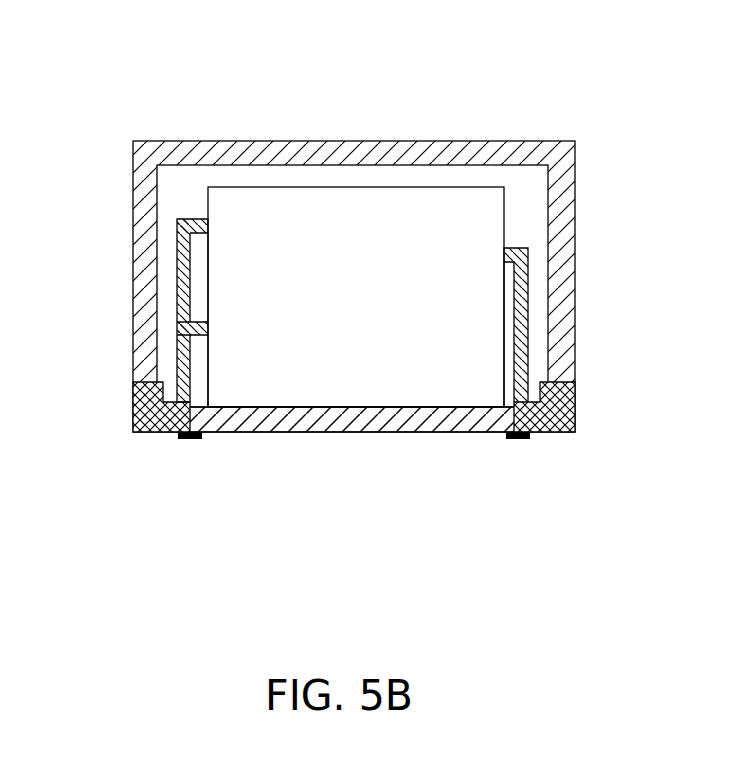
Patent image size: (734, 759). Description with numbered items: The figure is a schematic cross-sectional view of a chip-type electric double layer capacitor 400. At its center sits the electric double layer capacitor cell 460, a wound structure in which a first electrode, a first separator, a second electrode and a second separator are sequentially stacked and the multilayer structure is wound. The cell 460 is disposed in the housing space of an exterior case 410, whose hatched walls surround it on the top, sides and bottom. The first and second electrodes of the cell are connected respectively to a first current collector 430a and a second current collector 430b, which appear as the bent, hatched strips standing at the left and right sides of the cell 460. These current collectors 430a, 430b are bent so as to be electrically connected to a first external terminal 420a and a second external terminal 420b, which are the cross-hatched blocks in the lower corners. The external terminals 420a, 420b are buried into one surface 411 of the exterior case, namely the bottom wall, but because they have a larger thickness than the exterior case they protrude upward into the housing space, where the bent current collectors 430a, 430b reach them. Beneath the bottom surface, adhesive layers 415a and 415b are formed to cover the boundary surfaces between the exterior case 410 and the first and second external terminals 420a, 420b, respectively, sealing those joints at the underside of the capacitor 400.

The chip-type electric double layer capacitor 400 is at (363, 27).
The exterior case 410 is at (515, 148).
The one surface of the exterior case 411 is at (364, 432).
The adhesive layer 415a is at (188, 439).
The adhesive layer 415b is at (517, 439).
The first external terminal 420a is at (136, 432).
The second external terminal 420b is at (530, 440).
The first current collector 430a is at (180, 277).
The second current collector 430b is at (528, 302).
The electric double layer capacitor cell 460 is at (227, 205).